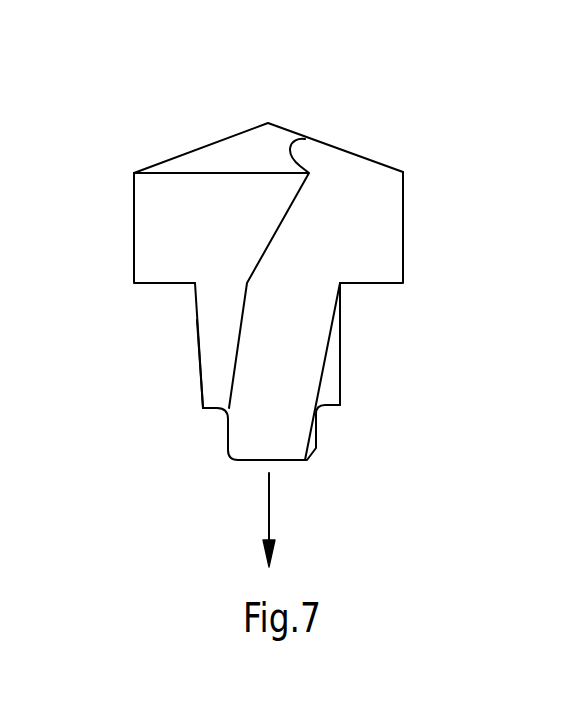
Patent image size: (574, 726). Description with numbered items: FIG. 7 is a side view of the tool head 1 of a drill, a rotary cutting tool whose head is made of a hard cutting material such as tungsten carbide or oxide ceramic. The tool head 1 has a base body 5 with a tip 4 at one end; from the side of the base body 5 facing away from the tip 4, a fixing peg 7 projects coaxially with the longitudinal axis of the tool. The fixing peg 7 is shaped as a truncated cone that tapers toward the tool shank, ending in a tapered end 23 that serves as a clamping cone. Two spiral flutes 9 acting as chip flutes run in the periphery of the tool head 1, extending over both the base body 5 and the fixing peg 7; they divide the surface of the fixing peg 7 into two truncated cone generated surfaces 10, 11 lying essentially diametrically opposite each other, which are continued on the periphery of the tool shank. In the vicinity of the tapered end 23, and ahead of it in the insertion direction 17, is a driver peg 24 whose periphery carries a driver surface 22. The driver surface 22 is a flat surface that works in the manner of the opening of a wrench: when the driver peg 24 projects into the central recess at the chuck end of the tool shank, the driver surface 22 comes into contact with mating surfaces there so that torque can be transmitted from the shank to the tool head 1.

The tool head 1 is at (267, 266).
The tip 4 is at (269, 121).
The base body 5 is at (268, 227).
The spiral flutes 9 is at (292, 320).
The truncated cone generated surface 10 is at (213, 313).
The fixing peg 7 is at (220, 360).
The truncated cone generated surface 11 is at (330, 377).
The tapered end of the fixing peg 23 is at (212, 412).
The driver surface 22 is at (228, 436).
The driver peg 24 is at (322, 441).
The insertion direction 17 is at (270, 500).